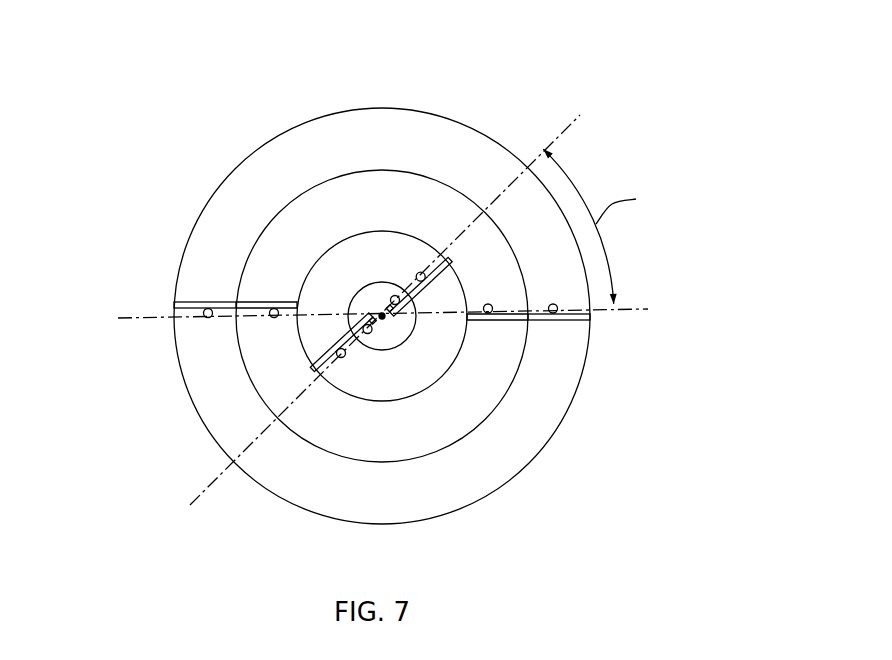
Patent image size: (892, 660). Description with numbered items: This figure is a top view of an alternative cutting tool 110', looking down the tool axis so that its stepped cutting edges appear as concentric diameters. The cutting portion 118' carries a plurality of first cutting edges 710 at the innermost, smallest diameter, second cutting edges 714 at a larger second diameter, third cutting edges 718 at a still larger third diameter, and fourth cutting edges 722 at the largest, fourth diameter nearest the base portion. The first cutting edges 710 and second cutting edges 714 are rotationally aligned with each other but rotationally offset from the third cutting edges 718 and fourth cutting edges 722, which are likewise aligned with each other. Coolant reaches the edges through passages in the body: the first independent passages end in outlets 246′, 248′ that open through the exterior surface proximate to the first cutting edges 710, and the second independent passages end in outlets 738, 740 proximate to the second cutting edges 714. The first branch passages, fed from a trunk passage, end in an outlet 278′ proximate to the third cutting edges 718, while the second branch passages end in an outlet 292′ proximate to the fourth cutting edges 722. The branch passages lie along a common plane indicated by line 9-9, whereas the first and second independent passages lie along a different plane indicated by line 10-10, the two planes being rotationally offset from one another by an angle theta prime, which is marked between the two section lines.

The cutting tool 110' is at (384, 302).
The cutting portion 118' is at (358, 316).
The outlet 246′ is at (391, 296).
The outlet 248′ is at (372, 334).
The outlet 278′ is at (490, 314).
The outlet 292′ is at (556, 314).
The first cutting edges 710 is at (371, 315).
The second cutting edges 714 is at (446, 262).
The third cutting edges 718 is at (252, 309).
The fourth cutting edges 722 is at (204, 300).
The outlet 738 is at (417, 270).
The outlet 740 is at (346, 360).
The line 9- 9 is at (135, 325).
The line 10- 10 is at (572, 141).